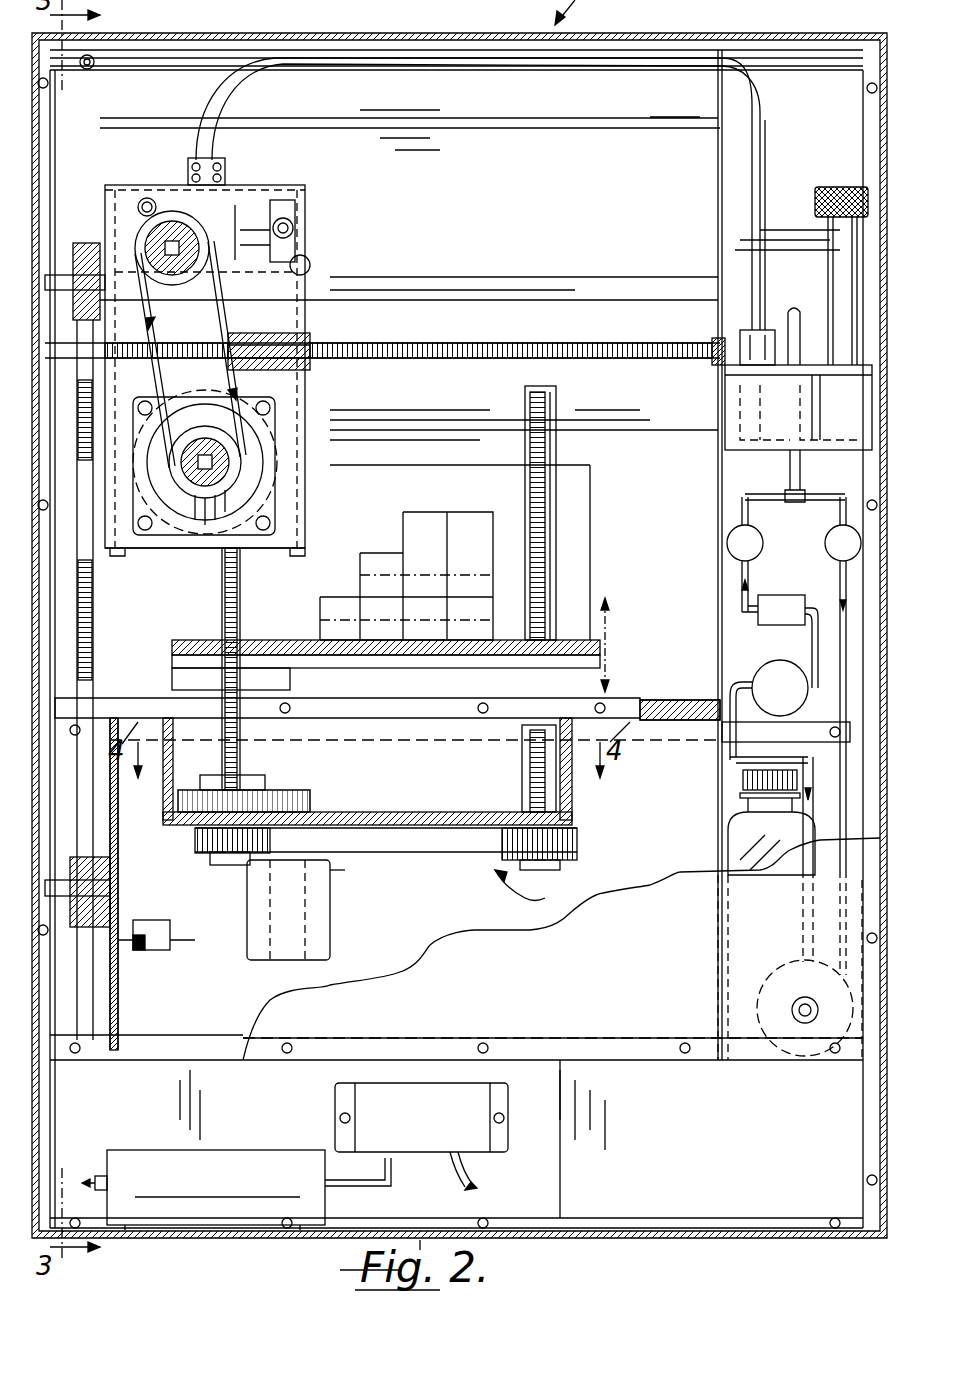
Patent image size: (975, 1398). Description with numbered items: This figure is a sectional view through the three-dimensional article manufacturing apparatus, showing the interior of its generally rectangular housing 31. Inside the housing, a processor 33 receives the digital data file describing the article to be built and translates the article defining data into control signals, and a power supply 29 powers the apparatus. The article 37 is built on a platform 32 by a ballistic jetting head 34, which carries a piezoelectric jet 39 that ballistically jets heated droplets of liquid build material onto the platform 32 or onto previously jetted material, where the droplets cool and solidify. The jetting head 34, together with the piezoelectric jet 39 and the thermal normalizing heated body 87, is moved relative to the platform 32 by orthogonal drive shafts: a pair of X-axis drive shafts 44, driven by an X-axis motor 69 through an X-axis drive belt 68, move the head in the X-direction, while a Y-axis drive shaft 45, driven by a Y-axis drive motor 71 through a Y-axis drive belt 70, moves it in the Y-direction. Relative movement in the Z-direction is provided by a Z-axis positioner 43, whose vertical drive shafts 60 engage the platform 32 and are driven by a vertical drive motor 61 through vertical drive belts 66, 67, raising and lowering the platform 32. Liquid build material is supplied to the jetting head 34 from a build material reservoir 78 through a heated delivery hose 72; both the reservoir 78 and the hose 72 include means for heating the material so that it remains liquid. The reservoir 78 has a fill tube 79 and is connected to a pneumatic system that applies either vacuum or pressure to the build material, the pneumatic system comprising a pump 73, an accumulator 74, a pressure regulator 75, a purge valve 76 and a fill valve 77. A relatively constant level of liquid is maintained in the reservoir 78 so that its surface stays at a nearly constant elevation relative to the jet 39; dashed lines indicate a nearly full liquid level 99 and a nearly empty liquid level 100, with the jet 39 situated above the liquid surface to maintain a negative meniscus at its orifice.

The power supply 29 is at (508, 1138).
The housing 31 is at (708, 34).
The platform 32 is at (575, 640).
The processor 33 is at (148, 1140).
The ballistic jetting head 34 is at (300, 318).
The article 37 is at (427, 504).
The piezoelectric jet 39 is at (300, 372).
The Z-axis positioner 43 is at (525, 888).
The X-axis drive shafts 44 is at (440, 335).
The Y-axis drive shaft 45 is at (140, 290).
The vertical drive shafts 60 is at (244, 775).
The vertical drive motor 61 is at (330, 885).
The vertical drive belt 66 is at (470, 860).
The vertical drive belt 67 is at (300, 802).
The X-axis drive belt 68 is at (90, 630).
The X-axis motor 69 is at (200, 950).
The Y-axis drive belt 70 is at (105, 322).
The Y-axis drive motor 71 is at (262, 478).
The build material delivery hose 72 is at (246, 85).
The pump 73 is at (758, 972).
The accumulator 74 is at (722, 822).
The pressure regulator 75 is at (770, 640).
The purge valve 76 is at (825, 568).
The fill valve 77 is at (780, 520).
The build material reservoir 78 is at (815, 455).
The fill tube 79 is at (810, 290).
The heated body 87 is at (146, 372).
The nearly full liquid level 99 is at (722, 393).
The nearly empty liquid level 100 is at (775, 455).